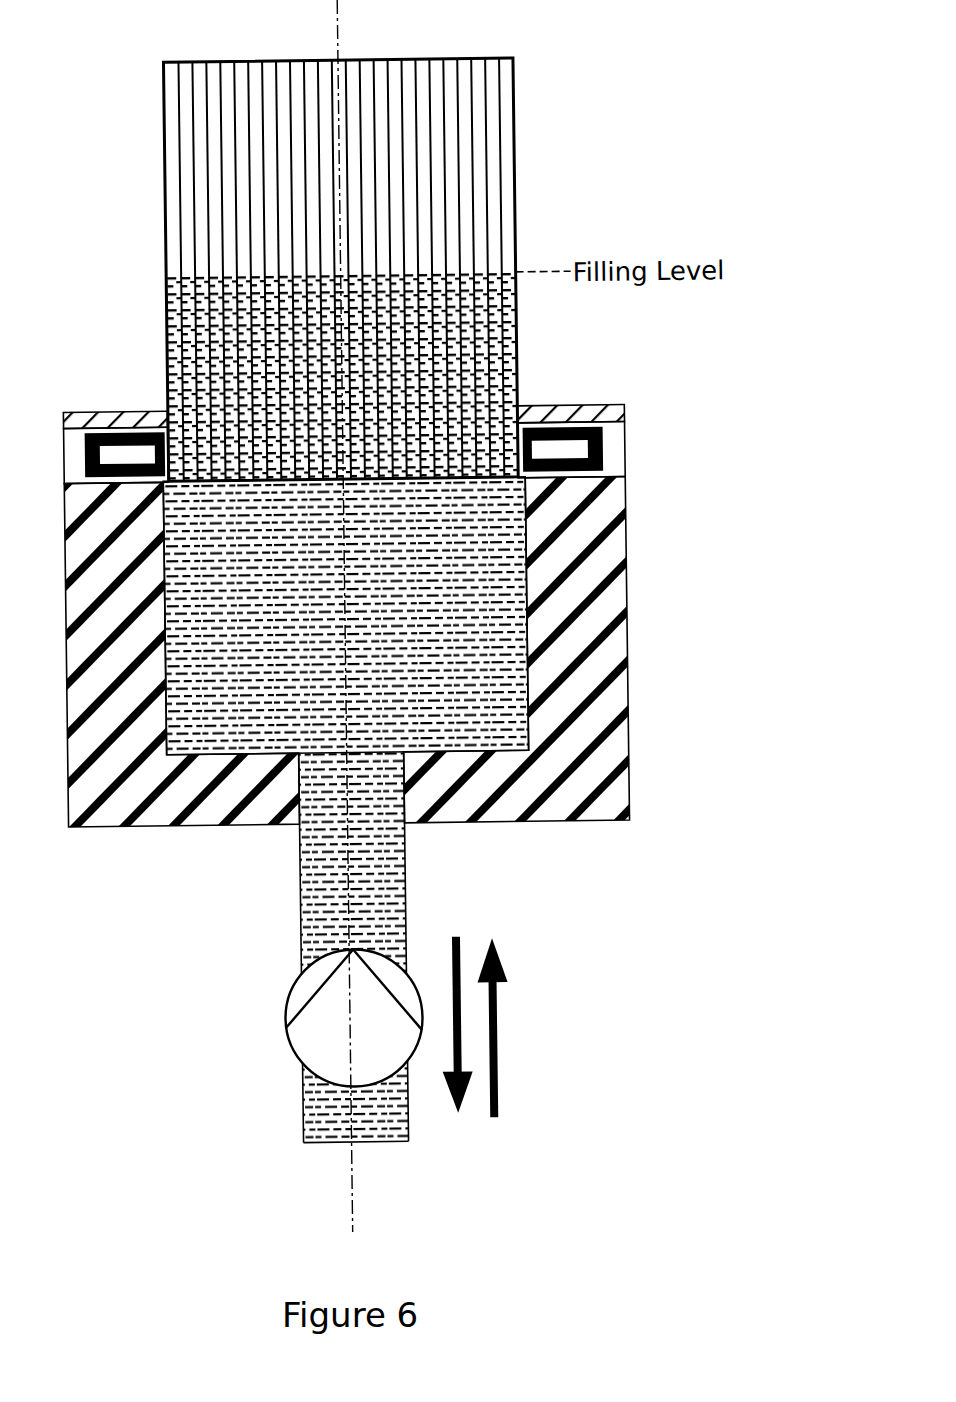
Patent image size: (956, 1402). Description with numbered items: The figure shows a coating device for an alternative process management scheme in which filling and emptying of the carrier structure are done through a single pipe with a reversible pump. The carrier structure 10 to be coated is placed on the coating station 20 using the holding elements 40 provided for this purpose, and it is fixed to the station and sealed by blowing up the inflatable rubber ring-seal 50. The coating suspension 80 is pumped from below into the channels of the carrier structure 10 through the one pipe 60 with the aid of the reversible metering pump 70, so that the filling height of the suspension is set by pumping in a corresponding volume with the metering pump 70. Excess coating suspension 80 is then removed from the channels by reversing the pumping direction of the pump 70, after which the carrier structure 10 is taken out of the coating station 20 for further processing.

The carrier structure 10 is at (434, 140).
The coating station 20 is at (628, 693).
The holding elements 40 is at (556, 488).
The inflatable rubber ring-seal 50 is at (605, 443).
The pipe 60 is at (403, 863).
The reversible metering pump 70 is at (334, 1029).
The coating suspension 80 is at (413, 580).